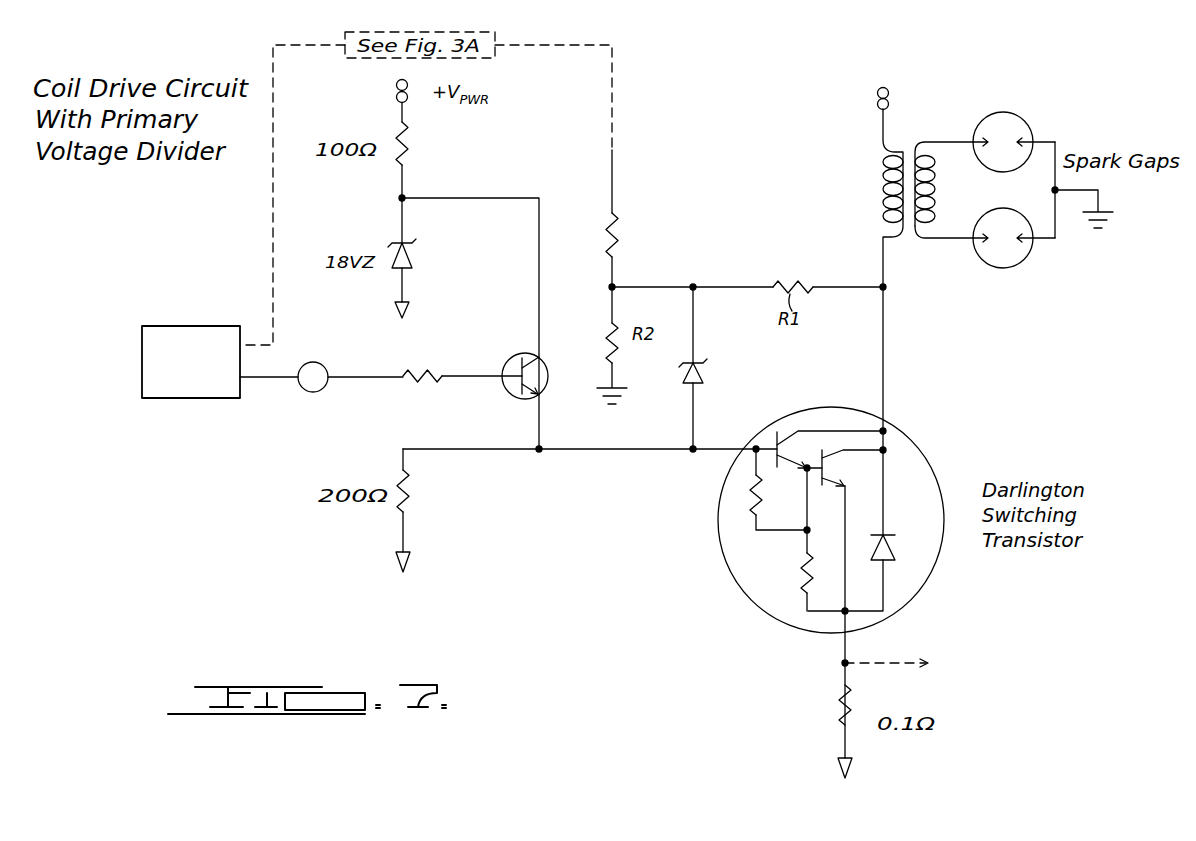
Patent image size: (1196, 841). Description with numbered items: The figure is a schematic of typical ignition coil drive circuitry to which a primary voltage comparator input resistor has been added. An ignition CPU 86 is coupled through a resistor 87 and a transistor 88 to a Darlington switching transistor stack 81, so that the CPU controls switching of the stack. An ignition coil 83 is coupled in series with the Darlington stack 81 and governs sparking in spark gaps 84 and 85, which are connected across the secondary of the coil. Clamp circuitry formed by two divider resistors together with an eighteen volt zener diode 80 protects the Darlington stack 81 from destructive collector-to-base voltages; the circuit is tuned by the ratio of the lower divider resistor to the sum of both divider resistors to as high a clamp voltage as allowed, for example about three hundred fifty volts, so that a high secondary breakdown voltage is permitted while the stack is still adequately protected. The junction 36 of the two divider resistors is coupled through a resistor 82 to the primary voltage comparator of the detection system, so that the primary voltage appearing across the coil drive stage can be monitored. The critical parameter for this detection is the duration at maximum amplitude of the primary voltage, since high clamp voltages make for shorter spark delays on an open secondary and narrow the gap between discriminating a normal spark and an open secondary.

The junction of resistors R1 and R2 36 is at (612, 287).
The 18 volt zener diode 80 is at (687, 386).
The Darlington switching transistor stack 81 is at (918, 447).
The resistor 82 is at (610, 232).
The ignition coil 83 is at (883, 188).
The spark gap 84 is at (1023, 125).
The spark gap 85 is at (1022, 251).
The ignition CPU 86 is at (190, 390).
The resistor 87 is at (420, 380).
The transistor 88 is at (518, 357).